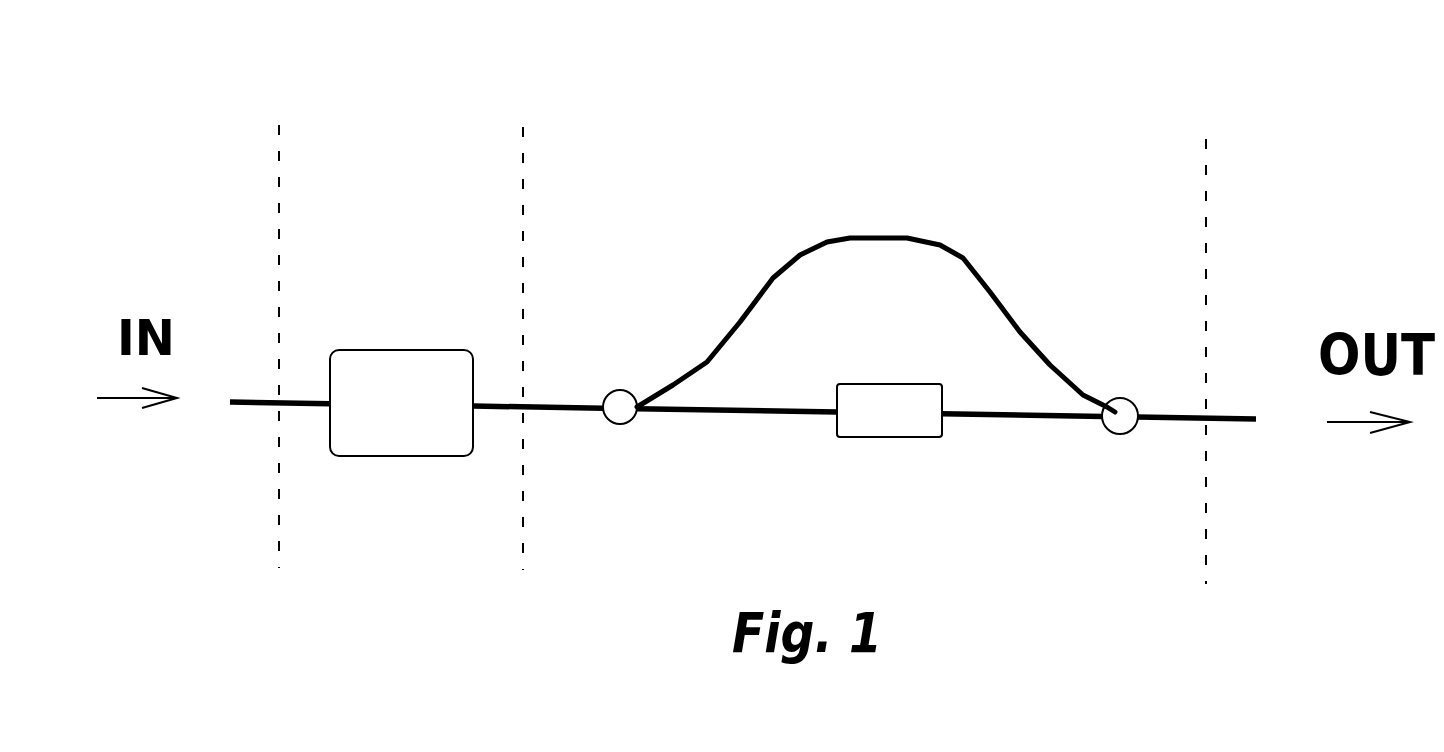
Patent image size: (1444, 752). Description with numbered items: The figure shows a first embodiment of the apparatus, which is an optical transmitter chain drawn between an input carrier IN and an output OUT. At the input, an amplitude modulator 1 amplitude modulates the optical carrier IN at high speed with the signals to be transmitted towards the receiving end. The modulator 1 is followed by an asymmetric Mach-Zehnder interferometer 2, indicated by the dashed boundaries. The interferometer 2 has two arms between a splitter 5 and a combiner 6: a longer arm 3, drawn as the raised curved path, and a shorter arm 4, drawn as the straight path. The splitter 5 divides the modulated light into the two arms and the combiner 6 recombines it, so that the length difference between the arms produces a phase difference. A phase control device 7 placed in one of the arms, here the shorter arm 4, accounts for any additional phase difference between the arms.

The amplitude modulator 1 is at (405, 357).
The asymmetric Mach-Zehnder interferometer 2 is at (1010, 136).
The longer arm 3 is at (809, 248).
The shorter arm 4 is at (763, 413).
The splitter 5 is at (616, 349).
The combiner 6 is at (1128, 361).
The phase control device 7 is at (922, 428).